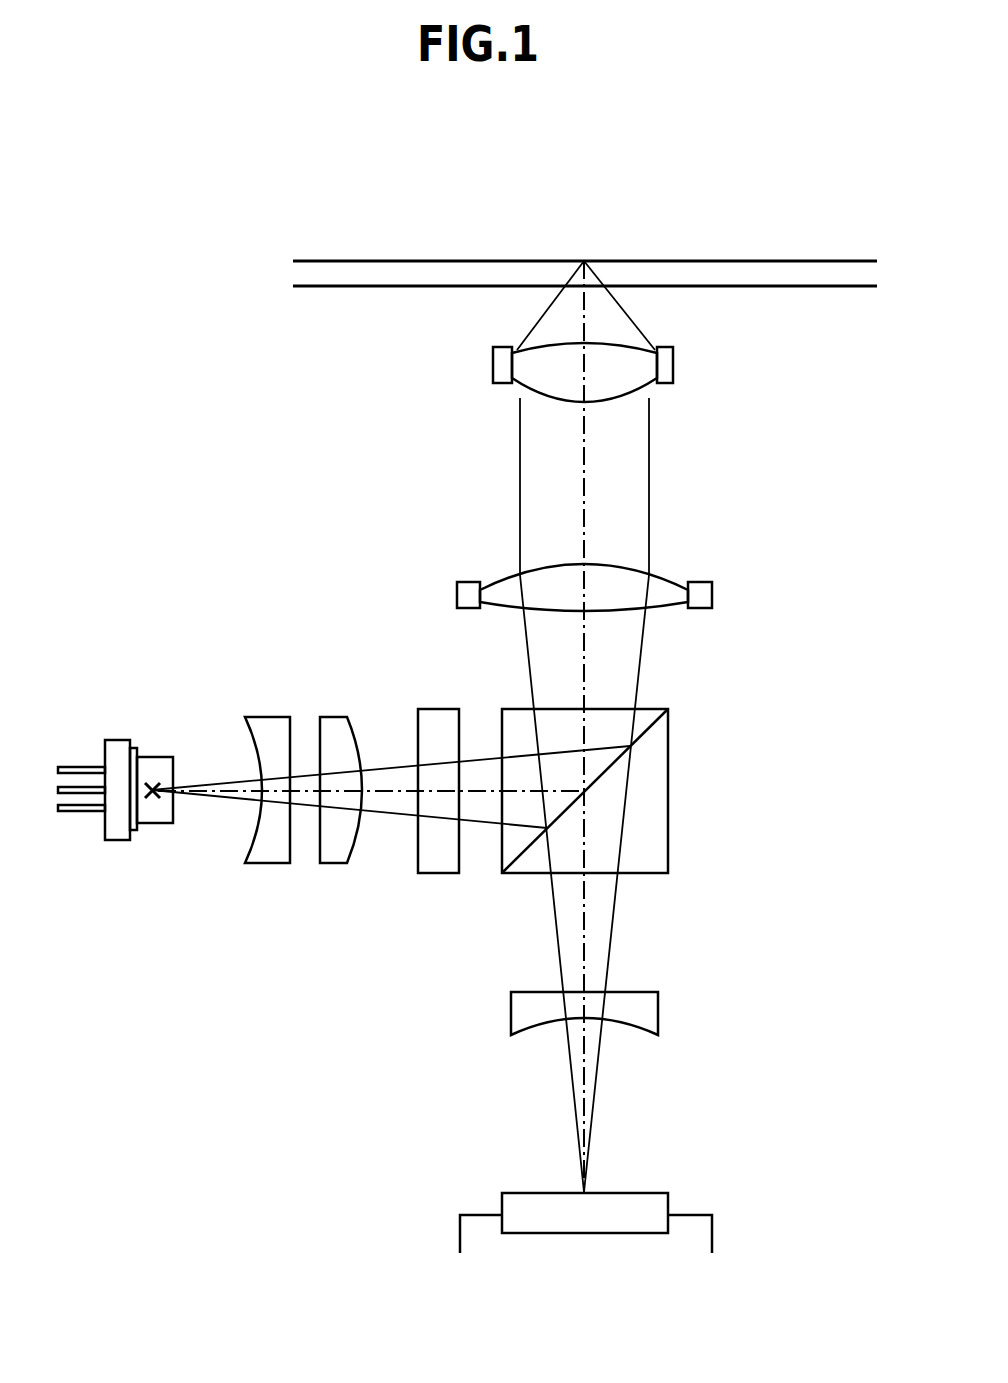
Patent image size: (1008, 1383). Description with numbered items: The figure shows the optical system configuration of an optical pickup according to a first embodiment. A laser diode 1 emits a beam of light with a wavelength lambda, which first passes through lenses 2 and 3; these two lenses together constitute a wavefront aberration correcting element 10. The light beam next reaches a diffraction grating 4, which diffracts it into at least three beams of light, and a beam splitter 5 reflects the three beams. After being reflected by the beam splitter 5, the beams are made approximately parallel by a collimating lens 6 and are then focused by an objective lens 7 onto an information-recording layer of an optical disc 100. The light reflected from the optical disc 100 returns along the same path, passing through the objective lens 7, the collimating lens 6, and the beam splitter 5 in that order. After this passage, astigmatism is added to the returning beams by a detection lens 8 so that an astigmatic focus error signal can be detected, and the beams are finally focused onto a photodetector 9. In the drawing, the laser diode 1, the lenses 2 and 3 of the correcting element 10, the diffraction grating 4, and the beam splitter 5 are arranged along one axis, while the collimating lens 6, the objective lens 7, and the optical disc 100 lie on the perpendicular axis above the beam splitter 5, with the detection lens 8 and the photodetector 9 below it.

The laser diode 1 is at (158, 767).
The lens 2 is at (273, 732).
The lens 3 is at (339, 732).
The diffraction grating 4 is at (440, 853).
The beam splitter 5 is at (648, 813).
The collimating lens 6 is at (698, 598).
The objective lens 7 is at (665, 363).
The detection lens 8 is at (648, 1013).
The photodetector 9 is at (632, 1222).
The wavefront aberration correcting element 10 is at (337, 628).
The optical disc 100 is at (823, 278).